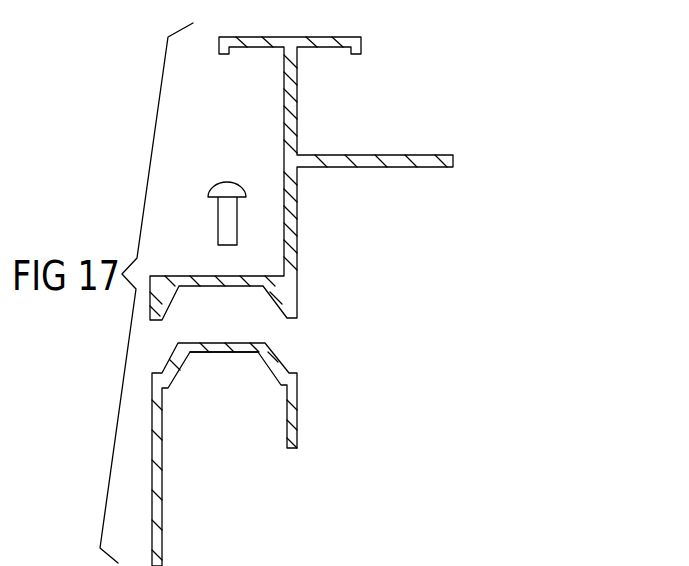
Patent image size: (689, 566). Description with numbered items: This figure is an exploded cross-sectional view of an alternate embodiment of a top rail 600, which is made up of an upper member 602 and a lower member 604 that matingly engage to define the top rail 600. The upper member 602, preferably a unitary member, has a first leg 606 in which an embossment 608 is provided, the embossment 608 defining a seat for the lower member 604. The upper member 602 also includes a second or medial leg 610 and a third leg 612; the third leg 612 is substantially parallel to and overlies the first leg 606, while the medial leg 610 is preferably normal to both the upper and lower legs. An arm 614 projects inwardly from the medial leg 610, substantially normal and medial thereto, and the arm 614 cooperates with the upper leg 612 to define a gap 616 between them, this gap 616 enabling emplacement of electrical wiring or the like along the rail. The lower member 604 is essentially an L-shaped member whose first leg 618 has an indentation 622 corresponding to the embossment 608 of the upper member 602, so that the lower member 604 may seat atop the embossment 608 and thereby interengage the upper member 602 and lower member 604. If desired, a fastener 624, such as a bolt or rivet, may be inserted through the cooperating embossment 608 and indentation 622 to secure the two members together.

The top rail 600 is at (406, 45).
The upper member 602 is at (324, 37).
The lower member 604 is at (297, 425).
The first leg 606 is at (170, 276).
The embossment 608 is at (264, 311).
The medial leg 610 is at (284, 113).
The third leg 612 is at (266, 37).
The arm 614 is at (405, 155).
The gap 616 is at (357, 104).
The first leg 618 is at (270, 340).
The indentation 622 is at (203, 353).
The fastener 624 is at (220, 186).